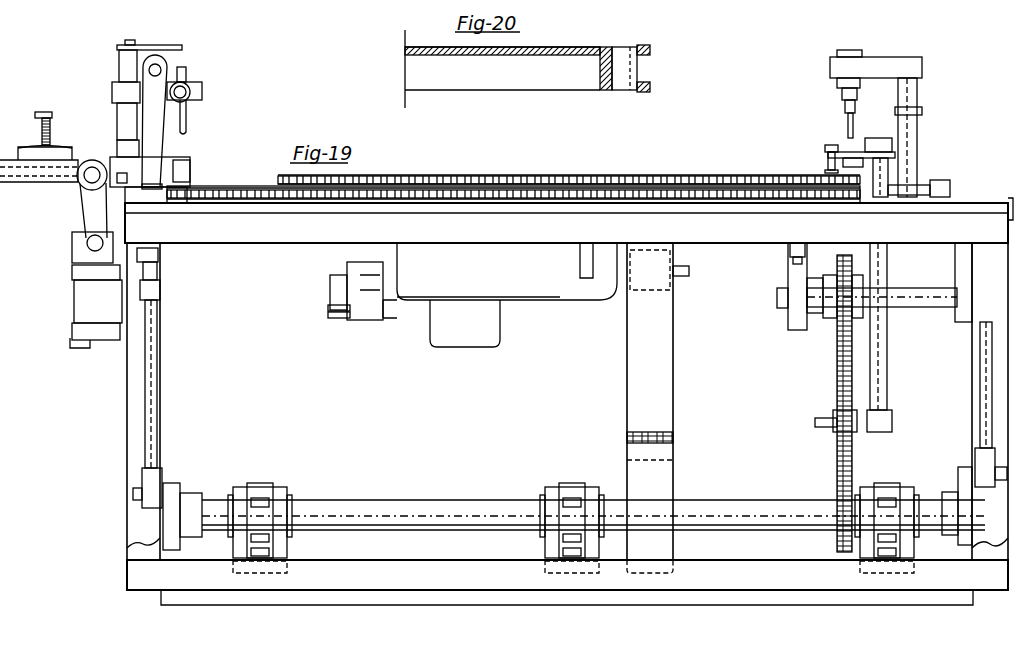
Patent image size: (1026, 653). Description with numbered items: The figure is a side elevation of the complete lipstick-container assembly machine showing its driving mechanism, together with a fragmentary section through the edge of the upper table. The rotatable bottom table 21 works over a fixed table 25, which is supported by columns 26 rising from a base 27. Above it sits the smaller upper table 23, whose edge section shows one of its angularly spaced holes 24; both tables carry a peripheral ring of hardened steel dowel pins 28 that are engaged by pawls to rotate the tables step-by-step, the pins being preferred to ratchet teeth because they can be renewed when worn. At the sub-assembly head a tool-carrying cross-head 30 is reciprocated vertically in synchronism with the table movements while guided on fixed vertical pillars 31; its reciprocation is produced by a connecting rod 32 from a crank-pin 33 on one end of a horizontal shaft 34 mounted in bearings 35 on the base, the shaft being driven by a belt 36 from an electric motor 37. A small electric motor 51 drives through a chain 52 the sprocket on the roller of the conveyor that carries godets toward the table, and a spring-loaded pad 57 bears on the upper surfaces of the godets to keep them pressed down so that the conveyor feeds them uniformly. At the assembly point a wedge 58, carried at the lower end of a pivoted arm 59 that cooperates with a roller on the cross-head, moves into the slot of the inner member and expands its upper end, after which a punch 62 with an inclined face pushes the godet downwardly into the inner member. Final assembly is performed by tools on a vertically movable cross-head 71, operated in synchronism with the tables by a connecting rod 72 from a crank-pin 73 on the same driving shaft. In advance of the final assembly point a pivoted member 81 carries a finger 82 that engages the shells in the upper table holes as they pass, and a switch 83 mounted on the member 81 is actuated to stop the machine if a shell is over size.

In FIG. 19, the bottom table 21 is at (260, 183).
In FIG. 20, the upper table 23 is at (582, 47).
In FIG. 19, the upper table 23 is at (515, 176).
In FIG. 20, the angularly spaced holes 24 is at (623, 55).
In FIG. 19, the fixed table 25 is at (737, 232).
In FIG. 19, the columns 26 is at (133, 422).
In FIG. 19, the base 27 is at (402, 574).
In FIG. 19, the dowel pins 28 is at (268, 201).
In FIG. 19, the tool-carrying cross-head 30 is at (120, 92).
In FIG. 19, the fixed vertical pillars 31 is at (122, 153).
In FIG. 19, the connecting rod 32 is at (155, 422).
In FIG. 19, the crank-pin 33 is at (133, 490).
In FIG. 19, the horizontal shaft 34 is at (405, 505).
In FIG. 19, the bearings 35 is at (260, 487).
In FIG. 19, the belt 36 is at (640, 388).
In FIG. 19, the electric motor 37 is at (423, 296).
In FIG. 19, the small electric motor 51 is at (98, 298).
In FIG. 19, the chain 52 is at (80, 220).
In FIG. 19, the spring-loaded pad 57 is at (60, 150).
In FIG. 19, the wedge 58 is at (165, 196).
In FIG. 19, the pivoted arm 59 is at (165, 150).
In FIG. 19, the punch 62 is at (187, 118).
In FIG. 19, the vertically movable cross-head 71 is at (882, 60).
In FIG. 19, the connecting rod 72 is at (985, 400).
In FIG. 19, the crank-pin 73 is at (975, 470).
In FIG. 19, the pivoted member 81 is at (848, 153).
In FIG. 19, the finger 82 is at (828, 162).
In FIG. 19, the switch 83 is at (886, 146).